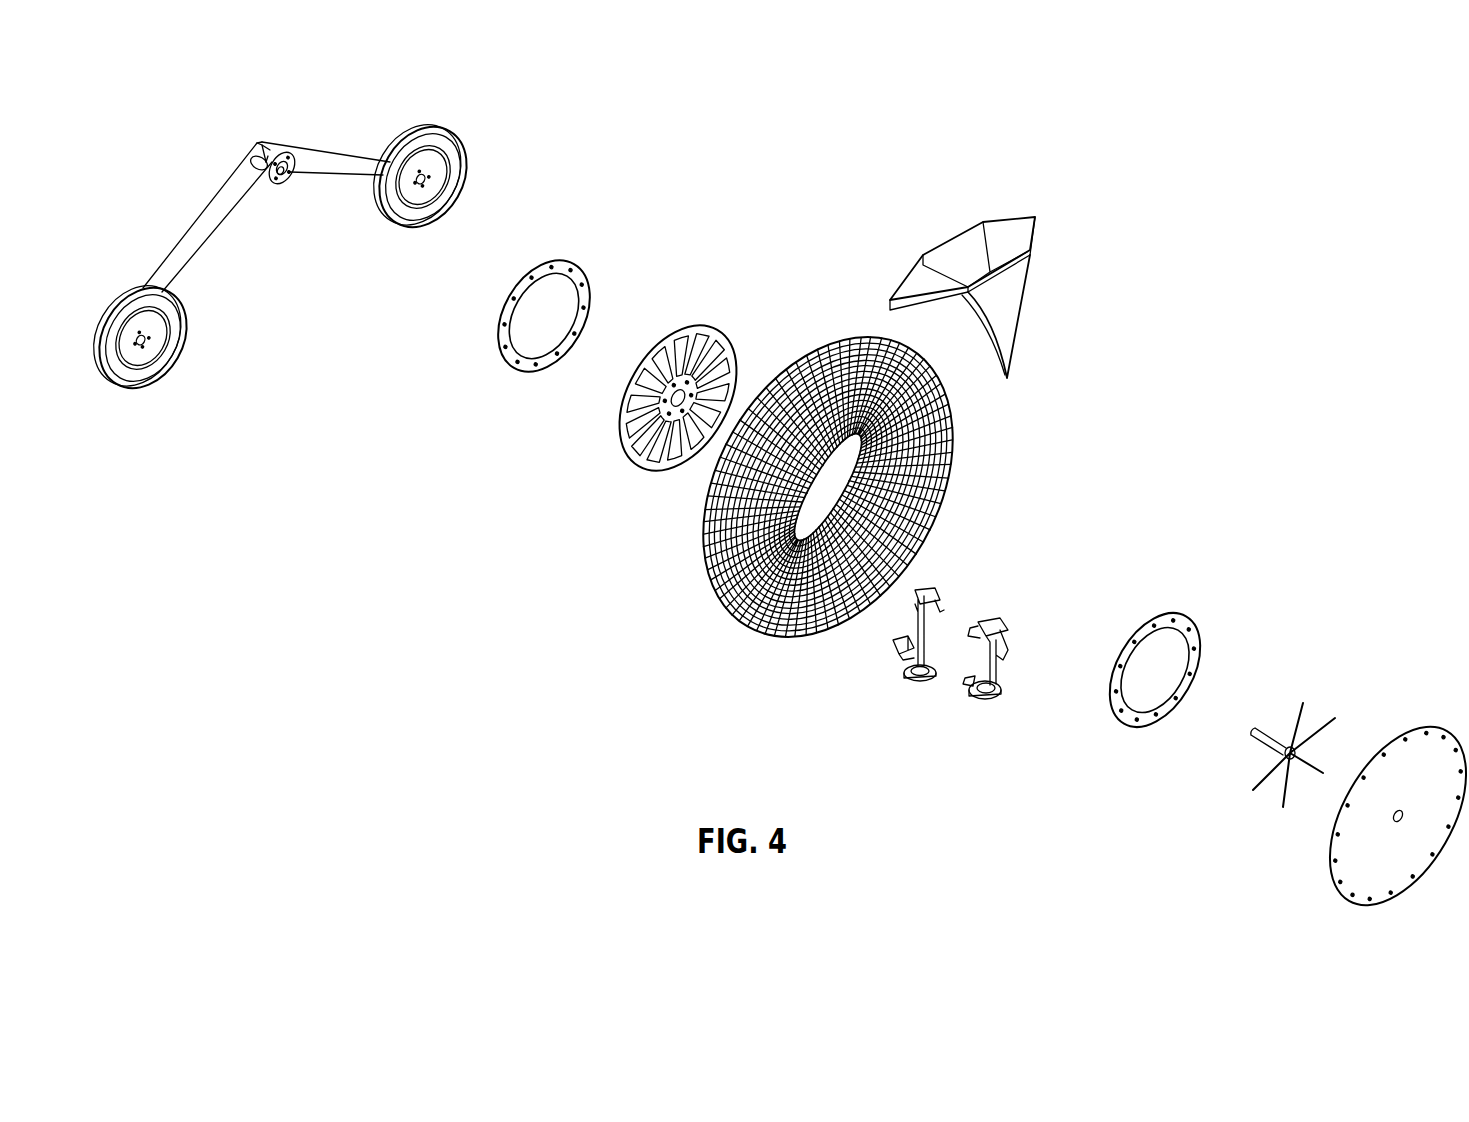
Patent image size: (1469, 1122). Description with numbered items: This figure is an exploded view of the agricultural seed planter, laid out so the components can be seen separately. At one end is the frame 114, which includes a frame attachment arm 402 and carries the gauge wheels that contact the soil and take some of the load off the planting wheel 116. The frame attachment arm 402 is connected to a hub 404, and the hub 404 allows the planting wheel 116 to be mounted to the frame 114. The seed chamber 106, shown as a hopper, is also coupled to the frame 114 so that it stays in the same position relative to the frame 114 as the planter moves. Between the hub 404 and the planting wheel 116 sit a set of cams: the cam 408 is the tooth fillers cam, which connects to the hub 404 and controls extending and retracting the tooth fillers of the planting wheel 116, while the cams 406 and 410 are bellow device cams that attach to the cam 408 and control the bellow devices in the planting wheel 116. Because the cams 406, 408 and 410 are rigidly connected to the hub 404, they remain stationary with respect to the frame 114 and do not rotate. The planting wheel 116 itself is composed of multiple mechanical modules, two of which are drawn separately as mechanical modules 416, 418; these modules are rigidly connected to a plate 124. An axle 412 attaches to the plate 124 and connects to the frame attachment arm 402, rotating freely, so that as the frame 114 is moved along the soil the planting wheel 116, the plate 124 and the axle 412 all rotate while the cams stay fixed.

The frame attachment arm 402 is at (258, 143).
The hub 404 is at (279, 182).
The frame 114 is at (217, 217).
The cam 406 is at (587, 250).
The cam 408 is at (722, 313).
The seed chamber 106 is at (1049, 247).
The planting wheel 116 is at (698, 593).
The mechanical module 416 is at (890, 682).
The mechanical module 418 is at (963, 702).
The cam 410 is at (1192, 605).
The axle 412 is at (1228, 777).
The plate 124 is at (1405, 705).